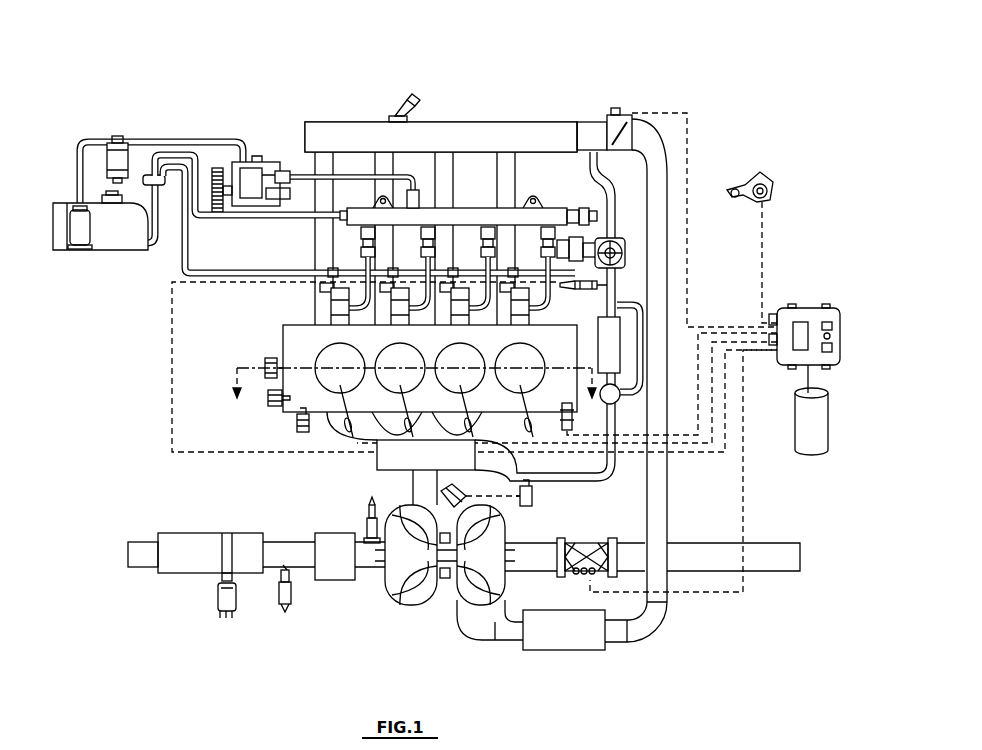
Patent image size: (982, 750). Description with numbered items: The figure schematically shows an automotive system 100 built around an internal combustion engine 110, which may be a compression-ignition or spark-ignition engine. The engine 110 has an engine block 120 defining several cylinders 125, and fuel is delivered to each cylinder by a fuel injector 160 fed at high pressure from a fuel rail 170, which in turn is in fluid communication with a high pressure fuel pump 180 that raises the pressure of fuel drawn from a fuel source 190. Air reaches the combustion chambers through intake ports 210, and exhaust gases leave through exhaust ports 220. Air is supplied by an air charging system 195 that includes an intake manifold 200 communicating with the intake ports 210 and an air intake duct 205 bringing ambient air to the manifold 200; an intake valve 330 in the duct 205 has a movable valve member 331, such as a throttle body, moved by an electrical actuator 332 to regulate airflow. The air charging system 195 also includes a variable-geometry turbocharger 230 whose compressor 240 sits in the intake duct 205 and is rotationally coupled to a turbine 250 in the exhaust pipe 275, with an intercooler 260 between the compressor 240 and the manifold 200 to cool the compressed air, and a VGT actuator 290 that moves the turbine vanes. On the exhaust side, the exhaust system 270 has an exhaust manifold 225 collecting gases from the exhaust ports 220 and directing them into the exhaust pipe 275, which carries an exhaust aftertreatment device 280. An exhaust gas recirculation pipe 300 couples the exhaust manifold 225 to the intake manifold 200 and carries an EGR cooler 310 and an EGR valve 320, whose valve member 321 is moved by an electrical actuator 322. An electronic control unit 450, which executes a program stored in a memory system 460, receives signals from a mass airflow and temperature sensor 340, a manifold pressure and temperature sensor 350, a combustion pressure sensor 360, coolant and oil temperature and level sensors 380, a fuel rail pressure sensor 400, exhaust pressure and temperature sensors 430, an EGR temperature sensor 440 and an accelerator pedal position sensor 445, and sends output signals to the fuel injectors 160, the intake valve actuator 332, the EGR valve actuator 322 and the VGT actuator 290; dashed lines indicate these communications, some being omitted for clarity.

The automotive system 100 is at (230, 106).
The internal combustion engine 110 is at (530, 110).
The engine block 120 is at (283, 335).
The cylinder 125 is at (540, 352).
The fuel injector 160 is at (330, 310).
The fuel rail 170 is at (360, 218).
The high pressure fuel pump 180 is at (258, 162).
The fuel source 190 is at (110, 245).
The air charging system 195 is at (494, 88).
The intake manifold 200 is at (447, 140).
The air intake duct 205 is at (770, 560).
The intake port 210 is at (327, 325).
The exhaust port 220 is at (403, 445).
The exhaust manifold 225 is at (351, 520).
The variable-geometry turbocharger 230 is at (434, 586).
The compressor 240 is at (470, 580).
The turbine 250 is at (412, 580).
The intercooler 260 is at (585, 640).
The exhaust system 270 is at (227, 545).
The exhaust pipe 275 is at (140, 555).
The exhaust aftertreatment device 280 is at (182, 557).
The VGT actuator 290 is at (466, 500).
The exhaust gas recirculation pipe 300 is at (581, 487).
The EGR cooler 310 is at (612, 358).
The EGR valve 320 is at (603, 240).
The valve member 321 is at (616, 249).
The electrical actuator 322 is at (623, 259).
The intake valve 330 is at (617, 113).
The valve member 331 is at (622, 140).
The electrical actuator 332 is at (614, 108).
The mass airflow and temperature sensor 340 is at (585, 574).
The manifold pressure and temperature sensor 350 is at (392, 110).
The combustion pressure sensor 360 is at (400, 465).
The coolant and oil temperature and level sensors 380 is at (300, 426).
The fuel rail pressure sensor 400 is at (640, 160).
The exhaust pressure and temperature sensors 430 is at (287, 612).
The EGR temperature sensor 440 is at (612, 290).
The accelerator pedal position sensor 445 is at (765, 178).
The electronic control unit 450 is at (808, 308).
The memory system 460 is at (812, 435).